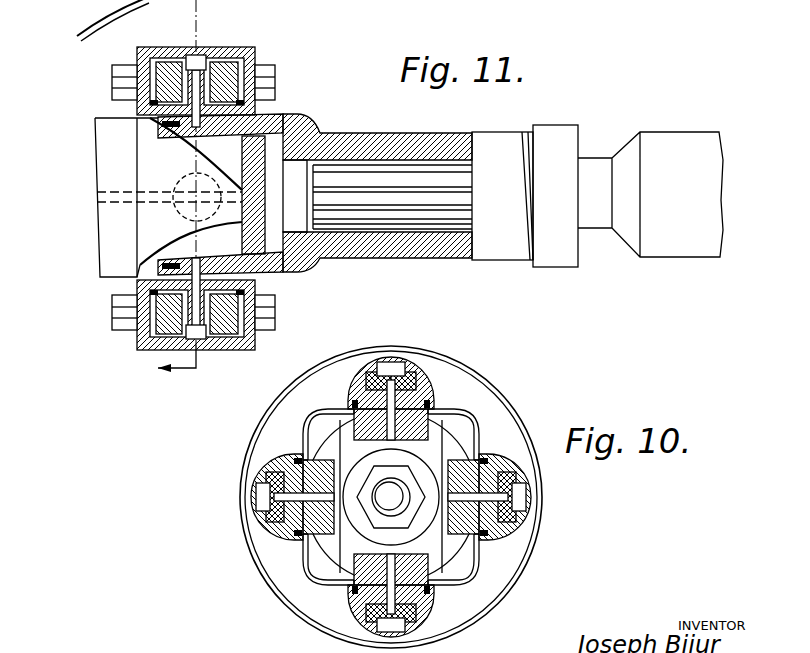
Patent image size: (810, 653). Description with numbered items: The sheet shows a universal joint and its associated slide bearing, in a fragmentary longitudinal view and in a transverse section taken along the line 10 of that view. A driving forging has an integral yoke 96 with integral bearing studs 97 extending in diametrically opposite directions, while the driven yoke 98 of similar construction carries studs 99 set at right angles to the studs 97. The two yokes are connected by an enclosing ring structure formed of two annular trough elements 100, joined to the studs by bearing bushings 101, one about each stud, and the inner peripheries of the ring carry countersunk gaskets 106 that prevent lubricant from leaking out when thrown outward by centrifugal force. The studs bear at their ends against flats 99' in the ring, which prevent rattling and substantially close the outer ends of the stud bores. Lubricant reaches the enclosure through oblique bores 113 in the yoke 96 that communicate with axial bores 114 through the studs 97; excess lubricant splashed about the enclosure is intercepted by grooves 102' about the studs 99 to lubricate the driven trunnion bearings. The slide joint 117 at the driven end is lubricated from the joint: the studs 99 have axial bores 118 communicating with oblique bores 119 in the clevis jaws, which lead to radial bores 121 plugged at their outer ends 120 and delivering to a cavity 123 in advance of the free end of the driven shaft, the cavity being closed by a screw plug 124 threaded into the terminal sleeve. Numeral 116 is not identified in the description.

In FIG. 11, the section line 10 is at (183, 371).
In FIG. 11, the yoke 96 is at (262, 140).
In FIG. 10, the bearing studs 97 is at (433, 383).
In FIG. 11, the driven yoke 98 is at (200, 130).
In FIG. 11, the studs 99 is at (212, 202).
In FIG. 10, the flats 99' is at (423, 497).
In FIG. 11, the annular trough elements 100 is at (214, 48).
In FIG. 10, the bearing bushings 101 is at (367, 358).
In FIG. 10, the grooves 102' is at (478, 497).
In FIG. 10, the countersunk gaskets 106 is at (358, 405).
In FIG. 10, the oblique bores 113 is at (462, 418).
In FIG. 10, the axial bores 114 is at (348, 376).
In FIG. 10, the pin bolt 116 is at (386, 357).
In FIG. 11, the slide joint 117 is at (440, 153).
In FIG. 11, the axial bores 118 is at (152, 121).
In FIG. 11, the oblique bores 119 is at (200, 138).
In FIG. 11, the plugged outer ends 120 is at (155, 124).
In FIG. 11, the radial bores 121 is at (318, 134).
In FIG. 11, the cavity 123 is at (295, 240).
In FIG. 11, the screw plug 124 is at (100, 248).